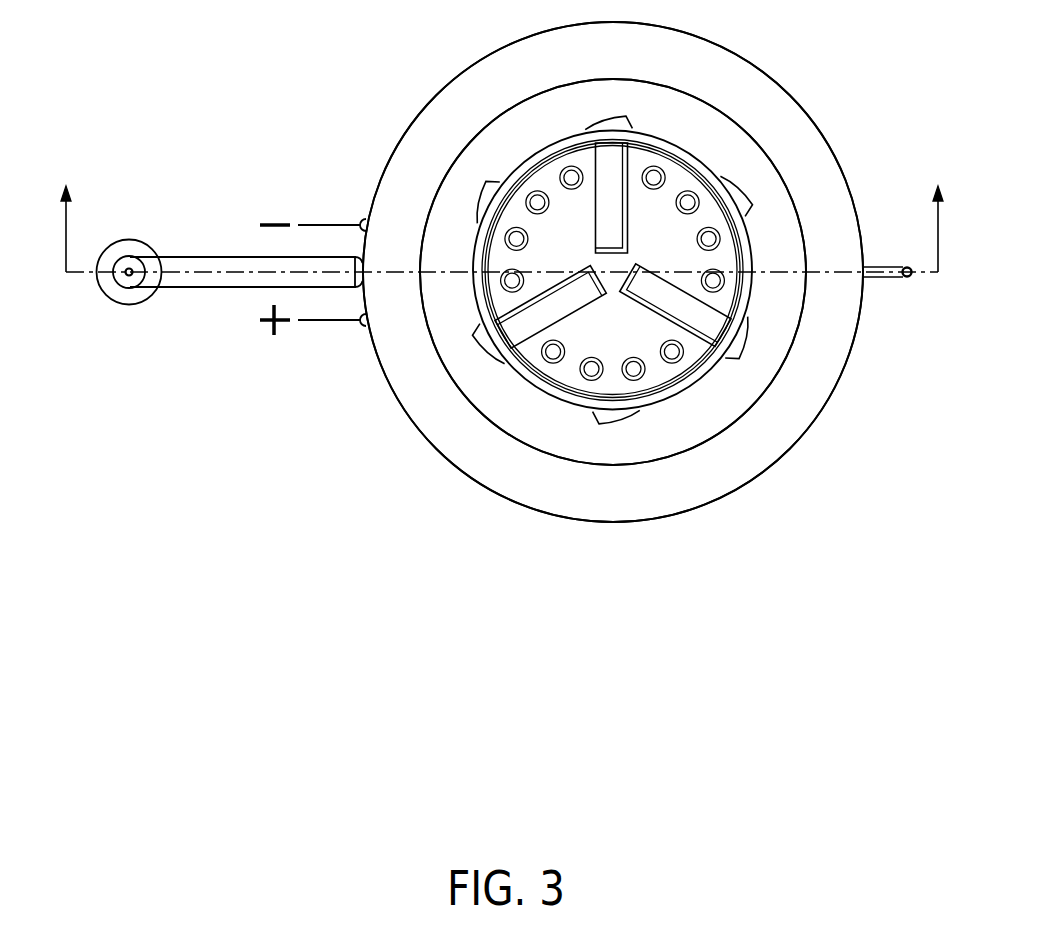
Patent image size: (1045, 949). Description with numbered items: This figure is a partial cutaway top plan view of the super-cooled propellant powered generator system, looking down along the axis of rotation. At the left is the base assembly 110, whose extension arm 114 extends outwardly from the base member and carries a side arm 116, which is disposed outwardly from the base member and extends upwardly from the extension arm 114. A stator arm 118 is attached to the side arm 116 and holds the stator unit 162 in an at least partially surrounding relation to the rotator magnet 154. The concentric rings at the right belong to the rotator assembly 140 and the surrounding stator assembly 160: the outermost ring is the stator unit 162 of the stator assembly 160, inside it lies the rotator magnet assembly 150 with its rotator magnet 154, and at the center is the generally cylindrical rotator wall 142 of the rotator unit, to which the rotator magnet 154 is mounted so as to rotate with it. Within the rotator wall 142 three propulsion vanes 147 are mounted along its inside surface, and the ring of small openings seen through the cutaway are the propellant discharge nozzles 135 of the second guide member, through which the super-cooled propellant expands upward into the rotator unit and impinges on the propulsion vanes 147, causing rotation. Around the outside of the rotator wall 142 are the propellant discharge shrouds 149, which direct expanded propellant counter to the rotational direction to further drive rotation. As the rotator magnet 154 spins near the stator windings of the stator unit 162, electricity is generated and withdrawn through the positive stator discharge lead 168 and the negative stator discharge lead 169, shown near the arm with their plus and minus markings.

The base assembly 110 is at (110, 362).
The extension arm 114 is at (117, 300).
The side arm 116 is at (130, 257).
The stator arm 118 is at (193, 257).
The propellant discharge nozzles 135 is at (573, 191).
The rotator assembly 140 is at (718, 377).
The rotator wall 142 is at (557, 141).
The propulsion vanes 147 is at (627, 205).
The propellant discharge shrouds 149 is at (490, 352).
The rotator magnet assembly 150 is at (738, 107).
The rotator magnet 154 is at (773, 203).
The stator assembly 160 is at (760, 487).
The stator unit 162 is at (478, 487).
The positive stator discharge lead 168 is at (345, 320).
The negative stator discharge lead 169 is at (311, 225).